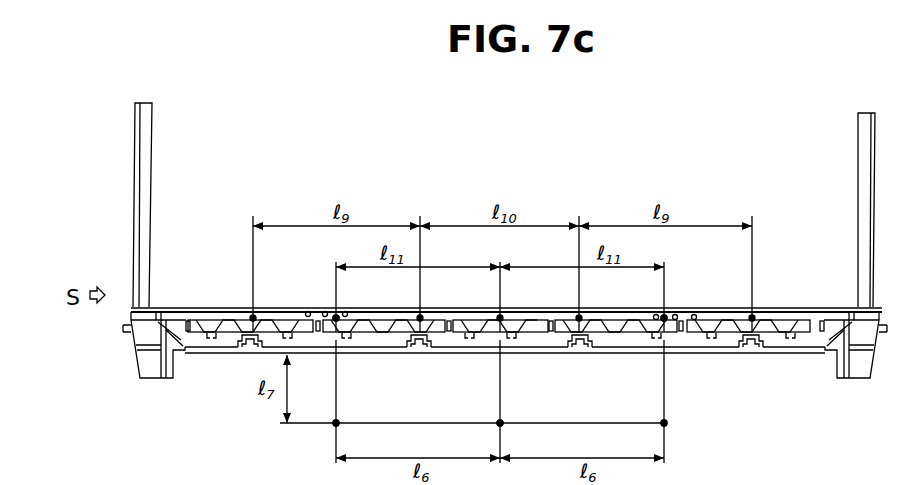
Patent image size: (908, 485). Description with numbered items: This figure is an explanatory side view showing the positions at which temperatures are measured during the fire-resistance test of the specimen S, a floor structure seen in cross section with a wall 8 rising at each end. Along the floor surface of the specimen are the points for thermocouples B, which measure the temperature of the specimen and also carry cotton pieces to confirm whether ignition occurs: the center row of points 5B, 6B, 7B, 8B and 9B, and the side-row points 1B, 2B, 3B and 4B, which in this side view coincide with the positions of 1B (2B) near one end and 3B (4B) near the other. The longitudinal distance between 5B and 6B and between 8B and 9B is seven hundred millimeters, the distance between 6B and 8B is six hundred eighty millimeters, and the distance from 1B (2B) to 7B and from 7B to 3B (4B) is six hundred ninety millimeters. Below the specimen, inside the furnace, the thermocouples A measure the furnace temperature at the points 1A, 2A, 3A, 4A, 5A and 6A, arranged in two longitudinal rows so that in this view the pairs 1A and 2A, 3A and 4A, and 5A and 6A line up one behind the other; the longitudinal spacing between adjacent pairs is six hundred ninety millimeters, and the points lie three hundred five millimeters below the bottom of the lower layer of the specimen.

The wall 8 is at (136, 172).
The thermocouple B measuring point 9B is at (269, 274).
The thermocouple B measuring point 8B is at (436, 274).
The thermocouple B measuring point 7B is at (517, 297).
The thermocouple B measuring point 6B is at (595, 274).
The thermocouple B measuring point 5B is at (768, 274).
The thermocouple B measuring point 4B is at (352, 297).
The thermocouple B measuring point 3B is at (352, 295).
The thermocouple B measuring point 2B is at (680, 297).
The thermocouple B measuring point 1B is at (680, 295).
The thermocouple A measuring point 6A is at (352, 401).
The thermocouple A measuring point 5A is at (352, 404).
The thermocouple A measuring point 4A is at (517, 401).
The thermocouple A measuring point 3A is at (517, 404).
The thermocouple A measuring point 2A is at (680, 401).
The thermocouple A measuring point 1A is at (680, 404).